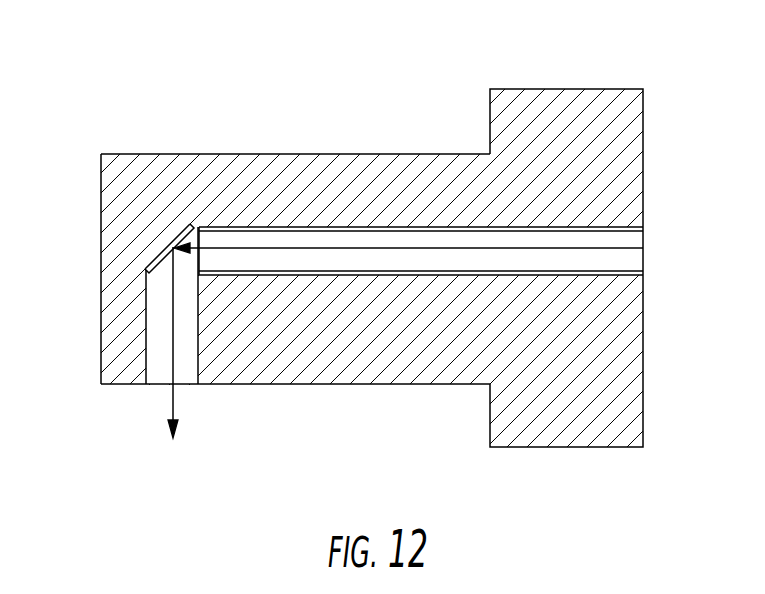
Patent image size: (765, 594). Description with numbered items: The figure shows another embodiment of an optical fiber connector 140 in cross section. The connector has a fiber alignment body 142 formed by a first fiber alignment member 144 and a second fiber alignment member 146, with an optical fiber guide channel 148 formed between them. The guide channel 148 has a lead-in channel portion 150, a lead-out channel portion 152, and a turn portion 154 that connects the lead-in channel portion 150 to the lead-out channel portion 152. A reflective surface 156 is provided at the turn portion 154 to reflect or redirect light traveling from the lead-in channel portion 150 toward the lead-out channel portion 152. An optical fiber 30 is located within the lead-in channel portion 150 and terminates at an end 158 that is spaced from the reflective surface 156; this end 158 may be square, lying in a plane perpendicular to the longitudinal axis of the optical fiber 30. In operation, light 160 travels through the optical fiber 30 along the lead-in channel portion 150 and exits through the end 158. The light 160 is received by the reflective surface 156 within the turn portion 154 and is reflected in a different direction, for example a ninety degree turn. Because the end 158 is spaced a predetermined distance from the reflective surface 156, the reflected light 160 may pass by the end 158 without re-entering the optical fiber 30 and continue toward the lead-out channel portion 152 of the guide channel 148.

The optical fiber connector 140 is at (382, 238).
The fiber alignment body 142 is at (367, 396).
The first fiber alignment member 144 is at (415, 170).
The second fiber alignment member 146 is at (428, 372).
The optical fiber guide channel 148 is at (537, 227).
The lead-in channel portion 150 is at (613, 209).
The lead-out channel portion 152 is at (127, 348).
The turn portion 154 is at (162, 242).
The reflective surface 156 is at (155, 258).
The end 158 is at (199, 258).
The light 160 is at (535, 248).
The optical fiber 30 is at (582, 240).